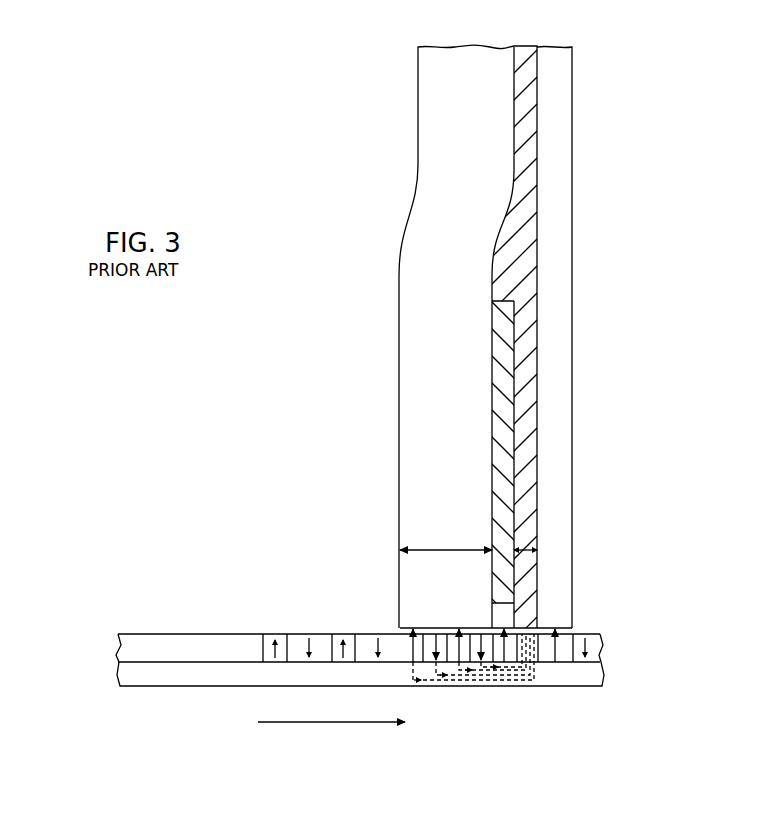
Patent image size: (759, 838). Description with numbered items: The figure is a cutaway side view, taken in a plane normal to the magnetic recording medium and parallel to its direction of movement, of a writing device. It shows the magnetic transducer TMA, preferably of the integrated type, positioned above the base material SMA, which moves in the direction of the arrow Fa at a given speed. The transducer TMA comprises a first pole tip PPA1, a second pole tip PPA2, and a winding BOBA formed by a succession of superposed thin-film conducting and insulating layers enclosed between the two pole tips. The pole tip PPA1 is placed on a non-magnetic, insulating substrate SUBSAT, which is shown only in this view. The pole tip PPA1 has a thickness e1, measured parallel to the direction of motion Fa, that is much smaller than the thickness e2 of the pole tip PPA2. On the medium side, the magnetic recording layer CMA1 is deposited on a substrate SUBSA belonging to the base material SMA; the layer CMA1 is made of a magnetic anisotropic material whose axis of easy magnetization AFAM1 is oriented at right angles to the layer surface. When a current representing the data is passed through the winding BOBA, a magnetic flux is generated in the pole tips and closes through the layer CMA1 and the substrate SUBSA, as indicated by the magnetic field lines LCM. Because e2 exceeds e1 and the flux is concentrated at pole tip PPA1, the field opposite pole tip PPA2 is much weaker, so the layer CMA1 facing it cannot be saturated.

The magnetic transducer TMA is at (410, 160).
The second pole tip PPA2 is at (472, 62).
The first pole tip PPA1 is at (537, 72).
The winding BOBA is at (502, 364).
The substrate SUBSAT is at (556, 408).
The thickness of second pole tip e2 is at (446, 538).
The thickness of first pole tip e1 is at (525, 538).
The base material SMA is at (614, 684).
The axis of easy magnetization AFAM1 is at (108, 636).
The substrate SUBSA is at (133, 677).
The magnetic recording layer CMA1 is at (600, 645).
The magnetic field lines LCM is at (538, 662).
The direction of motion Fa is at (331, 735).